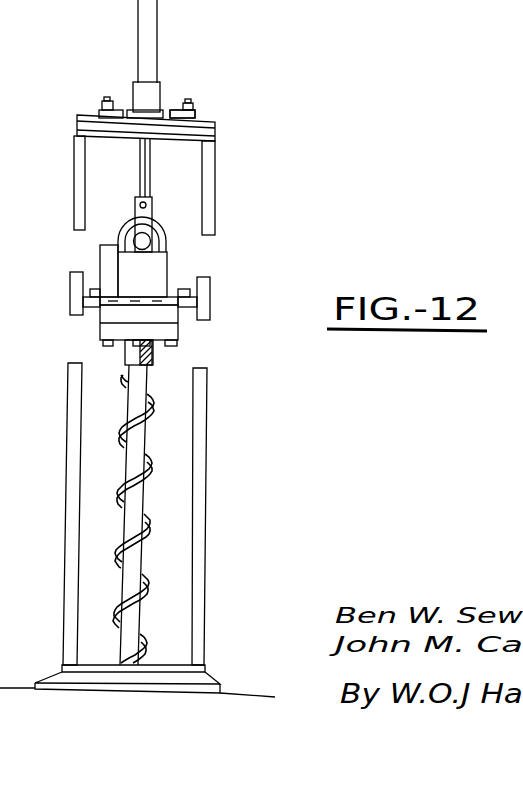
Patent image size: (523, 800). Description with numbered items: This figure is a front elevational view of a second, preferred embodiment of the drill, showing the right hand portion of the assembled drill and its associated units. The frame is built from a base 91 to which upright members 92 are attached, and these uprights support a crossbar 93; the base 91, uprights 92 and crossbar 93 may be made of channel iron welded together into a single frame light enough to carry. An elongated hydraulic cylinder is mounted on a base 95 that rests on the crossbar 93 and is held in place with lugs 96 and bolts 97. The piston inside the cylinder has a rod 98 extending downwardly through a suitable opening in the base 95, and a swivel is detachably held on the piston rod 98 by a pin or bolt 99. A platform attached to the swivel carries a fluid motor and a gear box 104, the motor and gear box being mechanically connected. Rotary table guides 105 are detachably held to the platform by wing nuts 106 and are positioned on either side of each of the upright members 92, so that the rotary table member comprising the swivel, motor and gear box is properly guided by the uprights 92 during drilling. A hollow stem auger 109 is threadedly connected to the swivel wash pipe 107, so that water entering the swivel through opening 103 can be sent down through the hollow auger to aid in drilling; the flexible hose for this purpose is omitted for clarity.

The base 91 is at (206, 683).
The upright members 92 is at (69, 448).
The crossbar 93 is at (78, 128).
The base 95 is at (131, 108).
The lugs 96 is at (198, 118).
The bolts 97 is at (187, 102).
The piston rod 98 is at (150, 160).
The pin or bolt 99 is at (138, 206).
The opening 103 is at (160, 237).
The gear box 104 is at (112, 316).
The rotary table guides 105 is at (70, 292).
The wing nuts 106 is at (210, 290).
The swivel wash pipe 107 is at (153, 353).
The hollow stem auger 109 is at (148, 431).